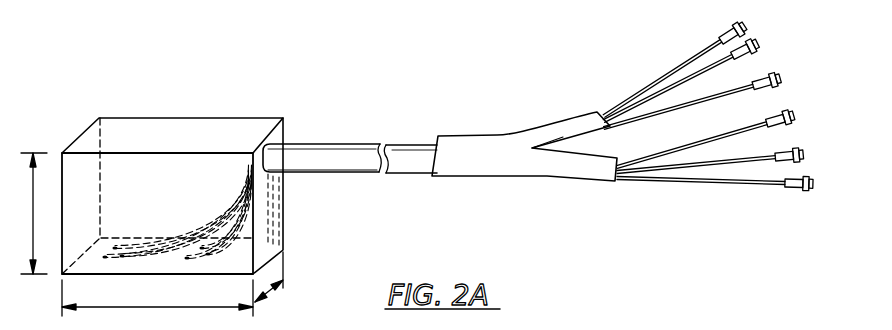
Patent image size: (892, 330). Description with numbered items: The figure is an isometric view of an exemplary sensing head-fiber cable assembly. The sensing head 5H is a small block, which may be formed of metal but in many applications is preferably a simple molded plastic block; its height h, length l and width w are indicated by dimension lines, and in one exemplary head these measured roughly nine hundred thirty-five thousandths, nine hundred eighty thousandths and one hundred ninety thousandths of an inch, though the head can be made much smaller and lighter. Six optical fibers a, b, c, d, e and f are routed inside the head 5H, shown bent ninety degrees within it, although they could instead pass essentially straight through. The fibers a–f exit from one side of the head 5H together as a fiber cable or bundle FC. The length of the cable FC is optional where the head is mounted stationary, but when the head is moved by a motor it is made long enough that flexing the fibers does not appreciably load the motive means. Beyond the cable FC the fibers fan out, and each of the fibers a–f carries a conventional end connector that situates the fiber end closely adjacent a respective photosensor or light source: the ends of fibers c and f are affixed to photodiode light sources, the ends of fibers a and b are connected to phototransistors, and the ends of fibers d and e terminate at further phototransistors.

The sensing head 5H is at (185, 118).
The fiber cable FC is at (410, 144).
The fiber a is at (690, 62).
The fiber b is at (662, 88).
The fiber c is at (643, 115).
The fiber d is at (660, 157).
The fiber e is at (688, 163).
The fiber f is at (712, 180).
The height h is at (30, 213).
The length l is at (157, 305).
The width w is at (269, 280).